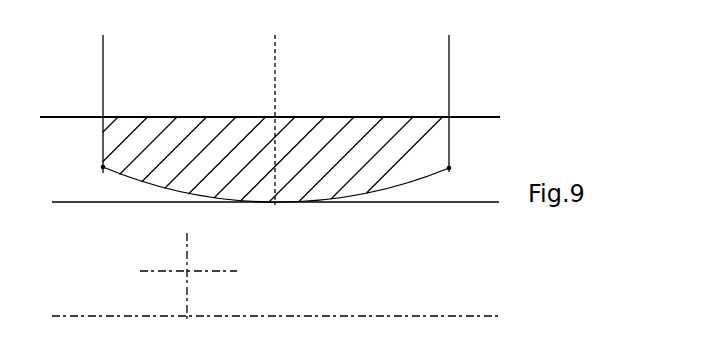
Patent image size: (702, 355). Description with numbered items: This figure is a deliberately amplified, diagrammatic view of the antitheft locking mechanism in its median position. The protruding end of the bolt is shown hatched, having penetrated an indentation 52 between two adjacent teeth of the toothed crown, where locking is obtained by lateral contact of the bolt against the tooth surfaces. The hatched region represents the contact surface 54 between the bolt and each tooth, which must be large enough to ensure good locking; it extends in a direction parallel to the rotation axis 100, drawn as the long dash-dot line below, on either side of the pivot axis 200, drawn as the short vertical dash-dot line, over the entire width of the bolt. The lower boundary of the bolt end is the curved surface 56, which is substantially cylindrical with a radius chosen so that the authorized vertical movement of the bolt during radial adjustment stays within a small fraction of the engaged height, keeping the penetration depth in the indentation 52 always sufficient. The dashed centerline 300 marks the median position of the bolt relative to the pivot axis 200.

The indentation 52 is at (465, 126).
The contact surface 54 is at (385, 131).
The curved surface 56 is at (422, 181).
The rotation axis 100 is at (338, 316).
The pivot axis 200 is at (186, 271).
The centerline 300 is at (277, 60).